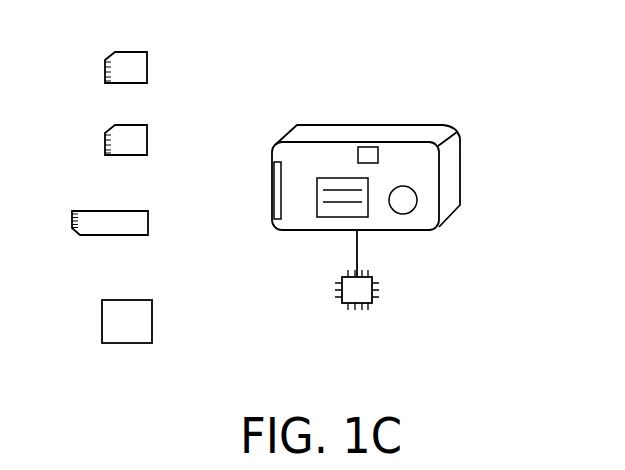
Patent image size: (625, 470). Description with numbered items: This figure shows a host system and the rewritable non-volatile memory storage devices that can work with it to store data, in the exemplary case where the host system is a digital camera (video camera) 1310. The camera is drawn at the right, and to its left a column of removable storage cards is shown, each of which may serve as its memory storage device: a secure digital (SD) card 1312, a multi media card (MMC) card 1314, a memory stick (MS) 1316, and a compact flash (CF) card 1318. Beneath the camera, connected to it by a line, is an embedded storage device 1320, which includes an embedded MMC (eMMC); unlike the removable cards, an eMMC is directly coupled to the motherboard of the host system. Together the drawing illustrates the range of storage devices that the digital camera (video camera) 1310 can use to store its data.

The digital camera (video camera) 1310 is at (460, 163).
The secure digital (SD) card 1312 is at (147, 60).
The multi media card (MMC) card 1314 is at (147, 132).
The memory stick (MS) 1316 is at (148, 222).
The compact flash (CF) card 1318 is at (152, 317).
The embedded storage device 1320 is at (379, 292).